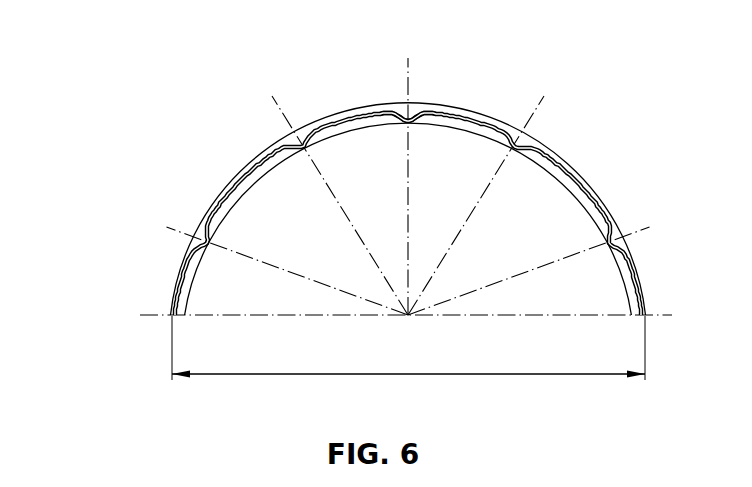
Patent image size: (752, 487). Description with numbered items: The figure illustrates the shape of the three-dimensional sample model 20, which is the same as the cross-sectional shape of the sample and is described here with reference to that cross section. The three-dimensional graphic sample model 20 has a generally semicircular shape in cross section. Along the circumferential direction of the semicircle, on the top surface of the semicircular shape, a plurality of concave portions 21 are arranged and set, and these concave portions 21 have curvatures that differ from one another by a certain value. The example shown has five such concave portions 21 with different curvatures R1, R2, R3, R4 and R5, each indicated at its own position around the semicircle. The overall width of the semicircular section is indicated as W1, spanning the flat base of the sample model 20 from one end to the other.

The 3D sample model 20 is at (164, 254).
The concave portions 21 is at (412, 122).
The curvature R1 is at (606, 244).
The curvature R2 is at (514, 150).
The curvature R3 is at (407, 121).
The curvature R4 is at (303, 148).
The curvature R5 is at (213, 245).
The width of cavity W1 is at (408, 348).